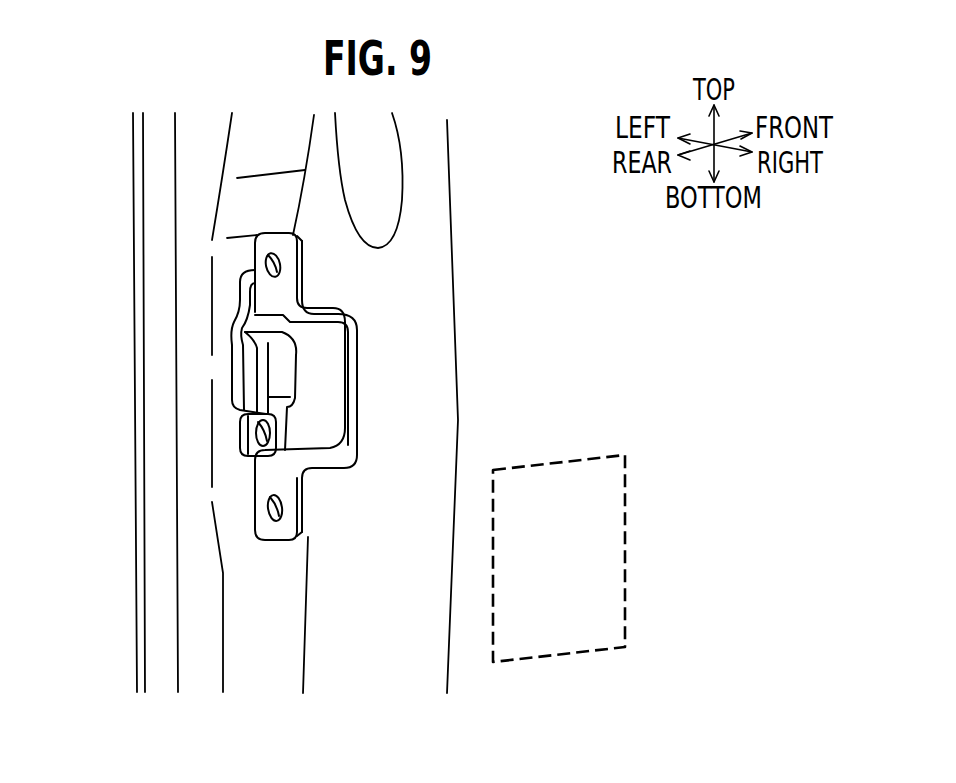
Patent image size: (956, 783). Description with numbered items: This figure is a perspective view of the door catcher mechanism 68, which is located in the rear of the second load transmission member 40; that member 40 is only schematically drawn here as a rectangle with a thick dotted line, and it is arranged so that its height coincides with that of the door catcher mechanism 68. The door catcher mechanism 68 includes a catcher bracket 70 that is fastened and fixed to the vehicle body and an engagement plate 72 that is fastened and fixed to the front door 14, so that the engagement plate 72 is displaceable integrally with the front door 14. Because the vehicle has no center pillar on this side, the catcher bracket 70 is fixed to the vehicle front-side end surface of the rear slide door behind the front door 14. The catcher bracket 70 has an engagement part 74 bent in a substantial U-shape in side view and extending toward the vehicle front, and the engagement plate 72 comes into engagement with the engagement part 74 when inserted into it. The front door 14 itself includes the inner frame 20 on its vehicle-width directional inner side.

The front door 14 is at (112, 520).
The inner frame 20 is at (530, 428).
The second load transmission member 40 is at (627, 507).
The door catcher mechanism 68 is at (383, 391).
The catcher bracket 70 is at (331, 477).
The engagement plate 72 is at (232, 370).
The engagement part 74 is at (358, 387).